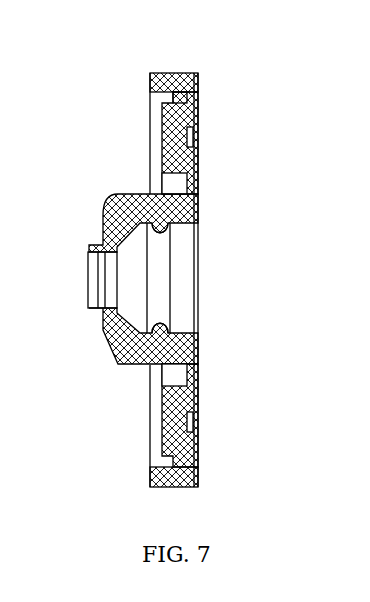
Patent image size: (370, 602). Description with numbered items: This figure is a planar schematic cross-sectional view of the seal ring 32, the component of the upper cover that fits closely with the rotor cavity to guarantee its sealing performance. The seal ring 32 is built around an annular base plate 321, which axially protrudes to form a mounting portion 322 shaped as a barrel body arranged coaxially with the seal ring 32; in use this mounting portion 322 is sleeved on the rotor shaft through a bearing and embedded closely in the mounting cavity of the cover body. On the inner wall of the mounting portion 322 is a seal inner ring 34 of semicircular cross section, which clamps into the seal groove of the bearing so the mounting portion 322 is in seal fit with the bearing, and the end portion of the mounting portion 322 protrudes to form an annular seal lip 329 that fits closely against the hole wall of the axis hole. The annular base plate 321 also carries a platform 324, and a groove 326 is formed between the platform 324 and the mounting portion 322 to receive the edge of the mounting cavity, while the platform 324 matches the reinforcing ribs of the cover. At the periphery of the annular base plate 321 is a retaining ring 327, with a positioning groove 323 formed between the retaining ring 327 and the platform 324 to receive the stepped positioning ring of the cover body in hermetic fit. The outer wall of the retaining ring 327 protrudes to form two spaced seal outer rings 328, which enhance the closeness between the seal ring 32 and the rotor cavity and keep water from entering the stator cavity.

The seal ring 32 is at (113, 196).
The seal inner ring 34 is at (165, 230).
The annular base plate 321 is at (192, 166).
The mounting portion 322 is at (115, 362).
The positioning groove 323 is at (196, 91).
The platform 324 is at (160, 122).
The groove 326 is at (190, 382).
The retaining ring 327 is at (183, 489).
The seal outer ring 328 is at (183, 73).
The annular seal lip 329 is at (88, 247).